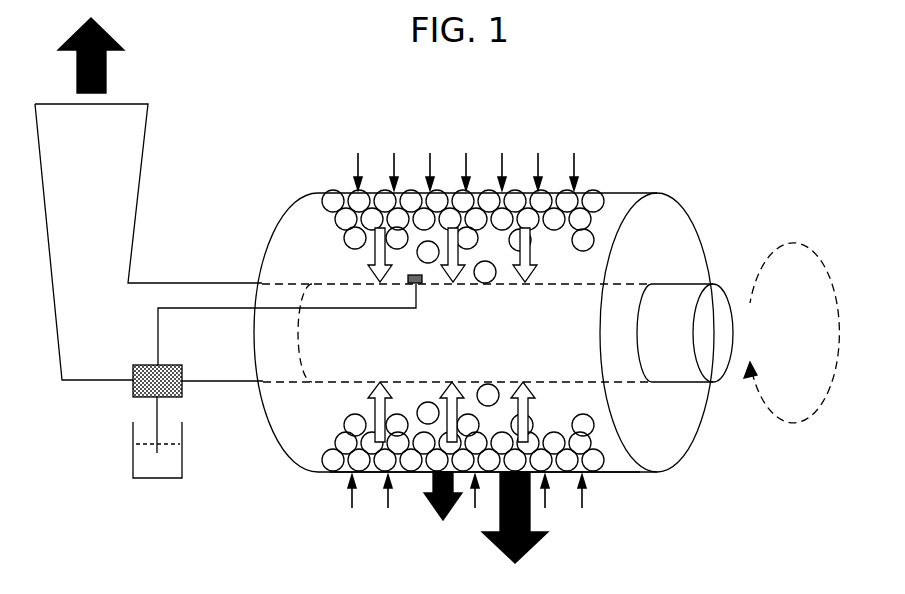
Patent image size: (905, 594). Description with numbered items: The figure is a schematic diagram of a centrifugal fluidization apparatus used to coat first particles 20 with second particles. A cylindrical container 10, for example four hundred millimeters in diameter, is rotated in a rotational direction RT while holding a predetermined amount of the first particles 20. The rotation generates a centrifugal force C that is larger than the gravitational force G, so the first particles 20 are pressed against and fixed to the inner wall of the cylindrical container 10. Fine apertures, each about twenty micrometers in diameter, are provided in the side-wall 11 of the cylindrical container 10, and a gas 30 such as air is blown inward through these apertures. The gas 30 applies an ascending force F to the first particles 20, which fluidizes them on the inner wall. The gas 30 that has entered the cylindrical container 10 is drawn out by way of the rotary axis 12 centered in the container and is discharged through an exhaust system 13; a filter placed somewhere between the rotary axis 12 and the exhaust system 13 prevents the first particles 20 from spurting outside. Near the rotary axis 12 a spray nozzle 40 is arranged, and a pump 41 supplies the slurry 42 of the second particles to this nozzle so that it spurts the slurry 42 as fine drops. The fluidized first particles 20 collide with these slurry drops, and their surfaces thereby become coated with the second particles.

The cylindrical container 10 is at (672, 228).
The side-wall 11 is at (630, 473).
The rotary axis 12 is at (627, 385).
The exhaust system 13 is at (142, 155).
The first particles 20 is at (594, 198).
The gas 30 is at (394, 170).
The spray nozzle 40 is at (406, 273).
The pump 41 is at (130, 390).
The slurry 42 is at (154, 462).
The ascending force F is at (372, 405).
The gravitational force G is at (433, 484).
The centrifugal force C is at (533, 522).
The rotational direction RT is at (795, 243).